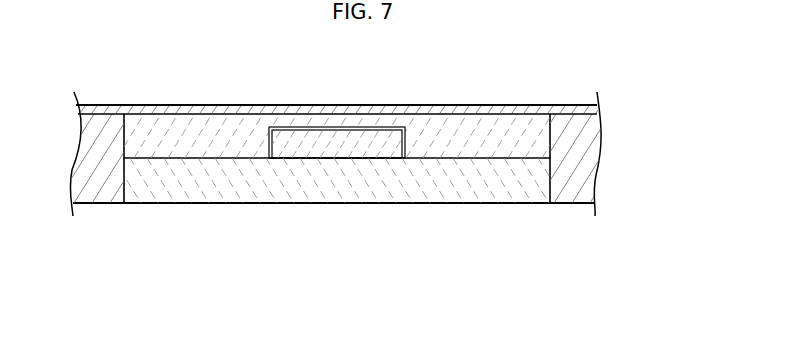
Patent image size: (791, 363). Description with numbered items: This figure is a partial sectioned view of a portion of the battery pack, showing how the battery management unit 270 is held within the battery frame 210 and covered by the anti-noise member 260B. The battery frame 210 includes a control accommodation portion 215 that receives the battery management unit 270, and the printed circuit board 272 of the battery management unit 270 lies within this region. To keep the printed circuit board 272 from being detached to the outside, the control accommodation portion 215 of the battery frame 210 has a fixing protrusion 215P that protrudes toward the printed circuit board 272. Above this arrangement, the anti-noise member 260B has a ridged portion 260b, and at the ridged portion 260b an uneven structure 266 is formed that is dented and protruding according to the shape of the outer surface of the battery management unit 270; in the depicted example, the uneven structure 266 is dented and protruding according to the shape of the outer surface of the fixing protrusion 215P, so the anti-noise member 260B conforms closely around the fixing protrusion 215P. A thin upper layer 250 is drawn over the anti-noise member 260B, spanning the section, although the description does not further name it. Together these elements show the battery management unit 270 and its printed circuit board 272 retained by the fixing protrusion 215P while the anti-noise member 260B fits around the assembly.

The battery frame 210 is at (587, 156).
The encapsulation/upper layer 250 is at (560, 108).
The anti-noise member 260B is at (334, 108).
The ridged portion 260b is at (339, 235).
The uneven structure 266 is at (336, 112).
The fixing protrusion 215P is at (352, 142).
The control accommodation portion 215 is at (488, 146).
The printed circuit board 272 is at (418, 187).
The battery management unit 270 is at (190, 160).